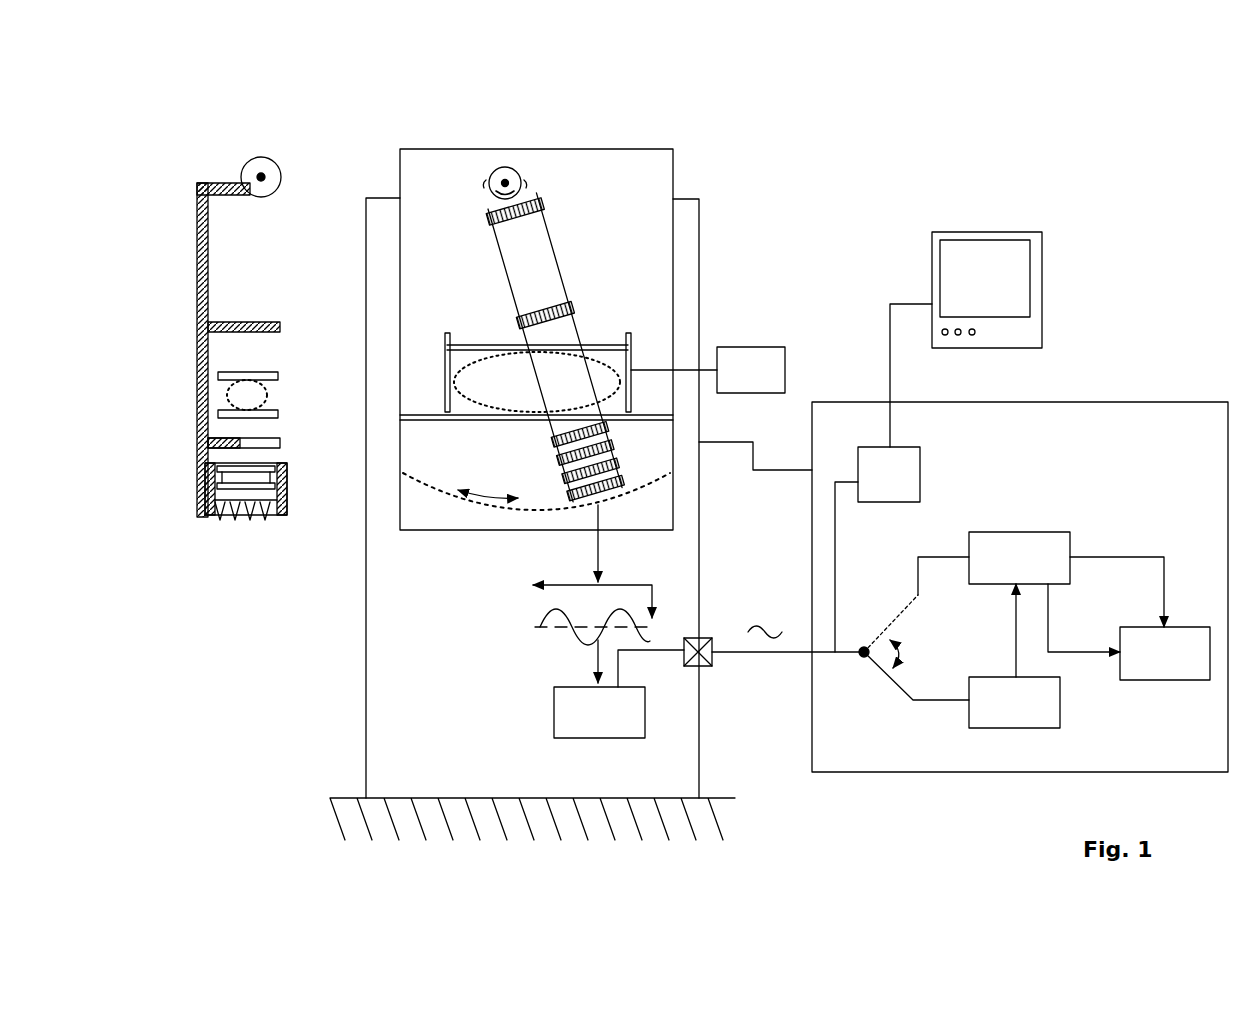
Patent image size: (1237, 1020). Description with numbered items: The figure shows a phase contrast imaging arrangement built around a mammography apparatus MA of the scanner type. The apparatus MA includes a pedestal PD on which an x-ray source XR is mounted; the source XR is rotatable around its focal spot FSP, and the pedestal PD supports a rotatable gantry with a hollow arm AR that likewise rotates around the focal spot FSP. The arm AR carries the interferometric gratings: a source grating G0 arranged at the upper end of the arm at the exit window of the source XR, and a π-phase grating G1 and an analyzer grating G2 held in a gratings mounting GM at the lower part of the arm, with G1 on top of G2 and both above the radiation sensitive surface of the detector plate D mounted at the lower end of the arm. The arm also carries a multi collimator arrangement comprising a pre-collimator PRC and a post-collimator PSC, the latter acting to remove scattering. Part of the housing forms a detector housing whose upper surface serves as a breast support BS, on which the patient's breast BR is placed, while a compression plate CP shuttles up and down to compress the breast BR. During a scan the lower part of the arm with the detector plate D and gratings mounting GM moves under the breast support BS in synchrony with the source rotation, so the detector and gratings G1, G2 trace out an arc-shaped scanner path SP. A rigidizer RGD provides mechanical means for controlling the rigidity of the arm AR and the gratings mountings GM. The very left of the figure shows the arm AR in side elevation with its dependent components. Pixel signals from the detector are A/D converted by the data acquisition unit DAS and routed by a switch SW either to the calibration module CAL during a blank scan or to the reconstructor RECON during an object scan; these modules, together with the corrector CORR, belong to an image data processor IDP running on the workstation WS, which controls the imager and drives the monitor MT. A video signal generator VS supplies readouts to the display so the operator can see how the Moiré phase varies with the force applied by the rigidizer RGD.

The mammography apparatus MA is at (658, 137).
The pedestal PD is at (685, 285).
The x-ray source XR is at (510, 168).
The focal spot FSP is at (503, 181).
The arm AR is at (562, 272).
The source grating G0 is at (545, 205).
The pre-collimator PRC is at (575, 316).
The phase grating G1 is at (622, 440).
The analyzer grating G2 is at (630, 482).
The compression plate CP is at (607, 340).
The breast BR is at (470, 385).
The breast support BS is at (482, 428).
The post-collimator PSC is at (550, 443).
The gratings mounting GM is at (565, 494).
The scanner path SP is at (425, 487).
The detector plate D is at (620, 505).
The data acquisition unit DAS is at (603, 648).
The rigidizer RGD is at (708, 370).
The workstation WS is at (915, 727).
The monitor MT is at (1000, 232).
The video signal generator VS is at (883, 478).
The switch SW is at (872, 660).
The reconstructor RECON is at (1019, 558).
The corrector module CORR is at (1129, 632).
The calibration module CAL is at (1014, 656).
The image data processor IDP is at (1090, 575).